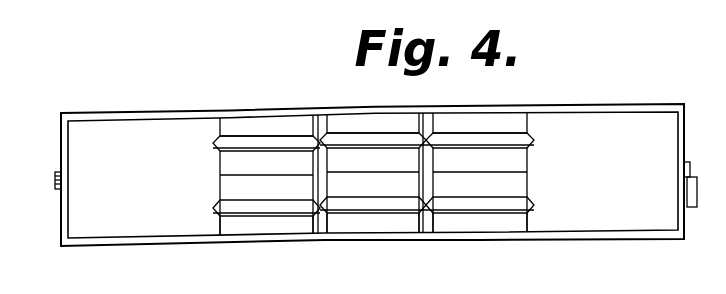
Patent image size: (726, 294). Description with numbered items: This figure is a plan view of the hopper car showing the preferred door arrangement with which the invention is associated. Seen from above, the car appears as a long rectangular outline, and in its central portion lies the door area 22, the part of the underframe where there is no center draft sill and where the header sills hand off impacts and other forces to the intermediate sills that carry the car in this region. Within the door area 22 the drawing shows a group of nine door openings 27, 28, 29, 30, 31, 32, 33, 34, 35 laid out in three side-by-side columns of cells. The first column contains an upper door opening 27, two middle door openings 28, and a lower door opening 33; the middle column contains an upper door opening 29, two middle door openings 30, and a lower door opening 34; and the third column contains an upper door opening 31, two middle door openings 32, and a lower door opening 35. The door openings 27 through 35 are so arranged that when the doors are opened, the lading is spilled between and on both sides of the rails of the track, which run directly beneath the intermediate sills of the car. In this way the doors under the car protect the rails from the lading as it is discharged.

The door area 22 is at (313, 167).
The door opening 27 is at (248, 136).
The door opening 28 is at (243, 170).
The door opening 29 is at (360, 135).
The door opening 30 is at (360, 170).
The door opening 31 is at (466, 131).
The door opening 32 is at (466, 168).
The door opening 33 is at (241, 233).
The door opening 34 is at (355, 233).
The door opening 35 is at (461, 231).